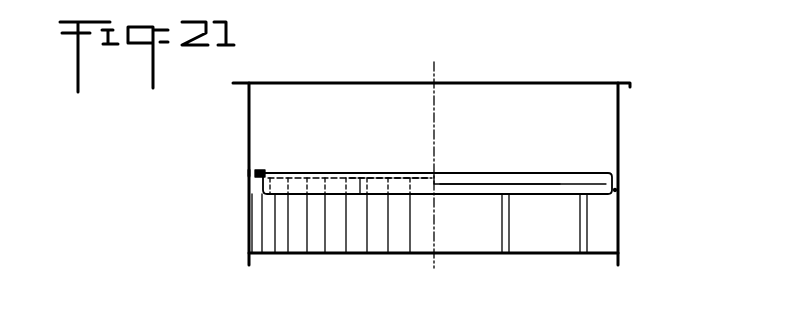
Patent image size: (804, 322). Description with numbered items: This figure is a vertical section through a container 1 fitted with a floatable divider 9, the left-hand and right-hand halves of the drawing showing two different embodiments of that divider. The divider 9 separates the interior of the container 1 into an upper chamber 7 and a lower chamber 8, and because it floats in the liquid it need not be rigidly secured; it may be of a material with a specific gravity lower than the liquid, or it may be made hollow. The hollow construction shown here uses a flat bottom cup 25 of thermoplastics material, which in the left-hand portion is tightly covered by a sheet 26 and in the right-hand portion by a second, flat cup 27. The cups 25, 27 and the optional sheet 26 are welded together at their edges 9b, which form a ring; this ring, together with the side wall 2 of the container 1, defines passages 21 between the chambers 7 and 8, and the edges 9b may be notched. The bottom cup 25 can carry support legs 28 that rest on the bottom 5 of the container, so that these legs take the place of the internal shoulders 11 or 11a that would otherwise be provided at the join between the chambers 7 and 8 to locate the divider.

The container 1 is at (628, 122).
The side wall 2 is at (620, 145).
The bottom 5 is at (356, 254).
The chamber 7 is at (396, 131).
The chamber 8 is at (472, 232).
The divider 9 is at (376, 185).
The edges 9b is at (262, 172).
The internal shoulders 11 is at (280, 231).
The internal shoulders 11a is at (249, 172).
The passages 21 is at (620, 192).
The bottom cup 25 is at (283, 197).
The sheet 26 is at (315, 172).
The second cup 27 is at (485, 172).
The support legs 28 is at (582, 236).